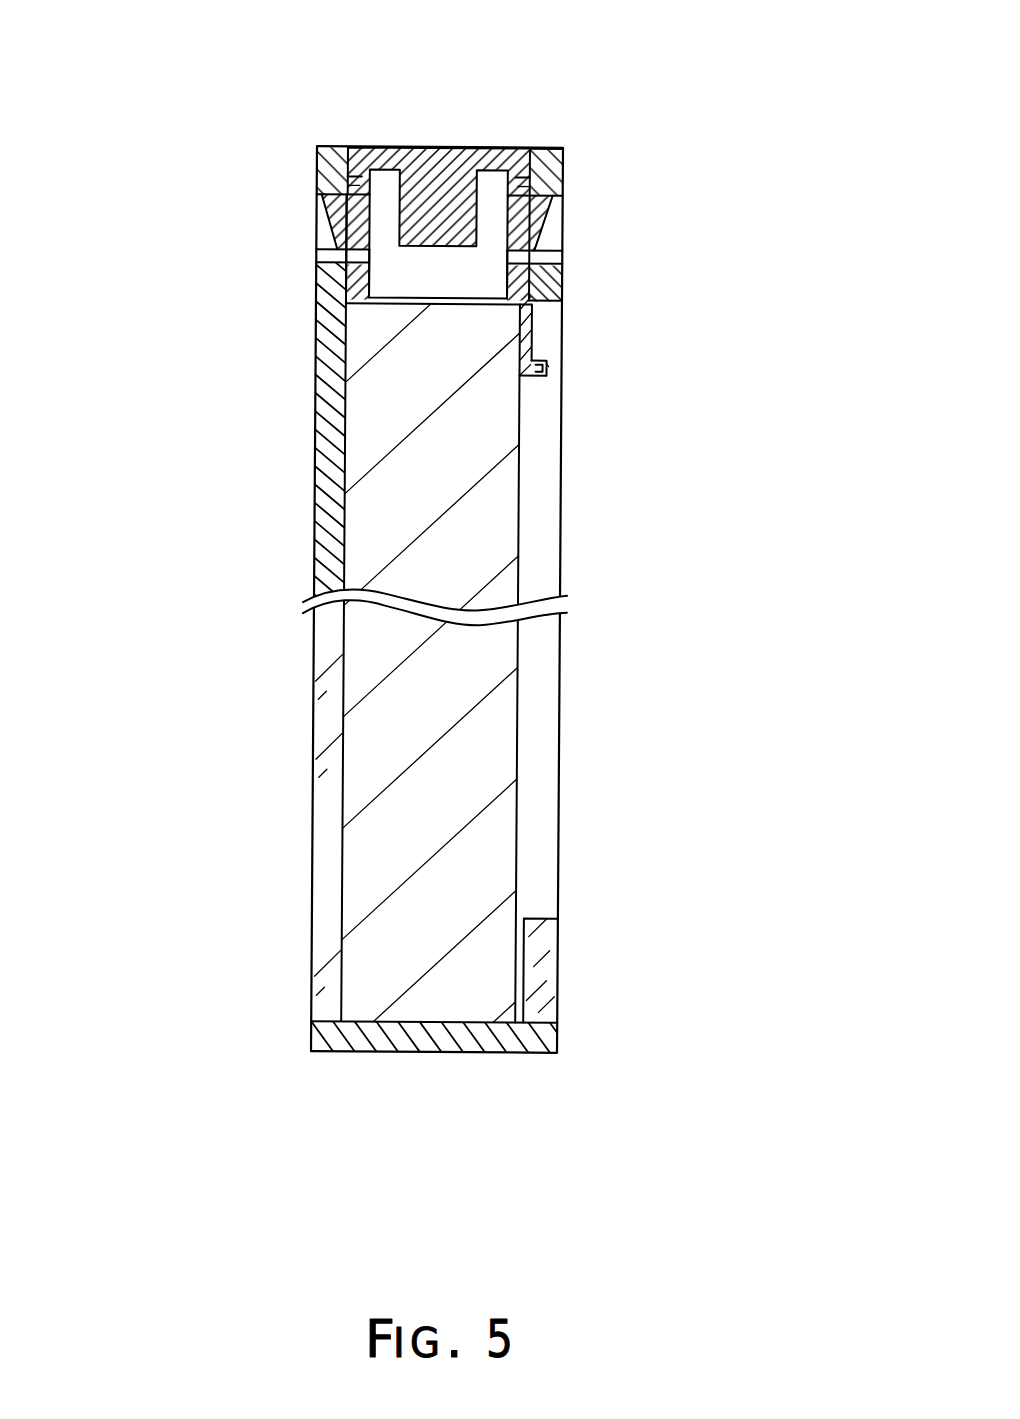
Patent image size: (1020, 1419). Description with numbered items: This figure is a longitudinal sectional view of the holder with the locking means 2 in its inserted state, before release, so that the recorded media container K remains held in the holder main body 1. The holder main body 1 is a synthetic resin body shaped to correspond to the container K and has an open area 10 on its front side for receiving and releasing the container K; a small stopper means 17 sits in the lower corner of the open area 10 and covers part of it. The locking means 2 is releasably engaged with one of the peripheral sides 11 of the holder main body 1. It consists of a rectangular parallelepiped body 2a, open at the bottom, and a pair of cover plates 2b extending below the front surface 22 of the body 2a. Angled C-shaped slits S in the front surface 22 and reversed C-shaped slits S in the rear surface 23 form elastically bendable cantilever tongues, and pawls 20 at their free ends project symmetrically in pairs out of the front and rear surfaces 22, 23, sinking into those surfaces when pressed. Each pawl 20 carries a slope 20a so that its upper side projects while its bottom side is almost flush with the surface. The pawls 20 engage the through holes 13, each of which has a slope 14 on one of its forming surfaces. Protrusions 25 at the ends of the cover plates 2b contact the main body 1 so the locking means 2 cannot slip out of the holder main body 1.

The holder main body 1 is at (459, 640).
The locking means 2 is at (656, 361).
The rectangular parallelepiped body 2a is at (535, 300).
The cover plates 2b is at (531, 338).
The open area 10 is at (545, 653).
The peripheral side 11 is at (557, 150).
The through holes 13 is at (333, 237).
The slope 14 is at (337, 160).
The stopper means 17 is at (545, 969).
The pawls 20 is at (327, 214).
The slope 20a is at (330, 257).
The front surface 22 is at (539, 162).
The rear surface 23 is at (342, 162).
The protrusions 25 is at (546, 363).
The recorded media container K is at (470, 771).
The slits S is at (340, 186).